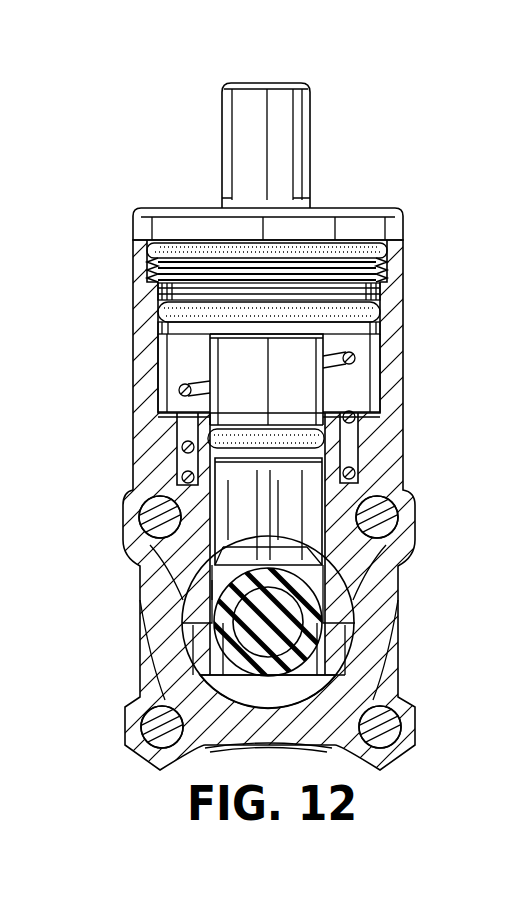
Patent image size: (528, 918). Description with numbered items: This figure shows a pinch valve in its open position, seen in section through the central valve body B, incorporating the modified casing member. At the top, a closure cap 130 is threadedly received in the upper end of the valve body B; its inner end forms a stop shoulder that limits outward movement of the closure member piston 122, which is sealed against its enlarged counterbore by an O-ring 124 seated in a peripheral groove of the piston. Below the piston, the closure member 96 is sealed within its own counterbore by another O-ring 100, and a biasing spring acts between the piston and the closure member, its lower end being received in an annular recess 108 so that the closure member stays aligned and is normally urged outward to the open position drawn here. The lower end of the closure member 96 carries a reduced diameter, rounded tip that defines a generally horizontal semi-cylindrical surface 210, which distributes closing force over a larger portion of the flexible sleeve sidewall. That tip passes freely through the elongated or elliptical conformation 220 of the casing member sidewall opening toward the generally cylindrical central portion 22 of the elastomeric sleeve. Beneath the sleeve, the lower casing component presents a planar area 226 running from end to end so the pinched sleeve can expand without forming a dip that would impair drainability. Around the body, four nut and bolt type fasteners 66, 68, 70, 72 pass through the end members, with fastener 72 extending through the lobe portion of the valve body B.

The closure cap 130 is at (395, 222).
The closure member piston 122 is at (378, 296).
The O-ring 124 is at (162, 312).
The closure member 96 is at (300, 383).
The O-ring 100 is at (214, 437).
The annular recess 108 is at (355, 445).
The fastener 66 is at (150, 512).
The fastener 68 is at (395, 512).
The fastener 72 is at (158, 727).
The fastener 70 is at (385, 722).
The elongated or elliptical conformation 220 is at (214, 588).
The semi-cylindrical surface 210 is at (335, 582).
The central portion 22 is at (330, 610).
The planar area 226 is at (345, 662).
The central valve body B is at (172, 619).